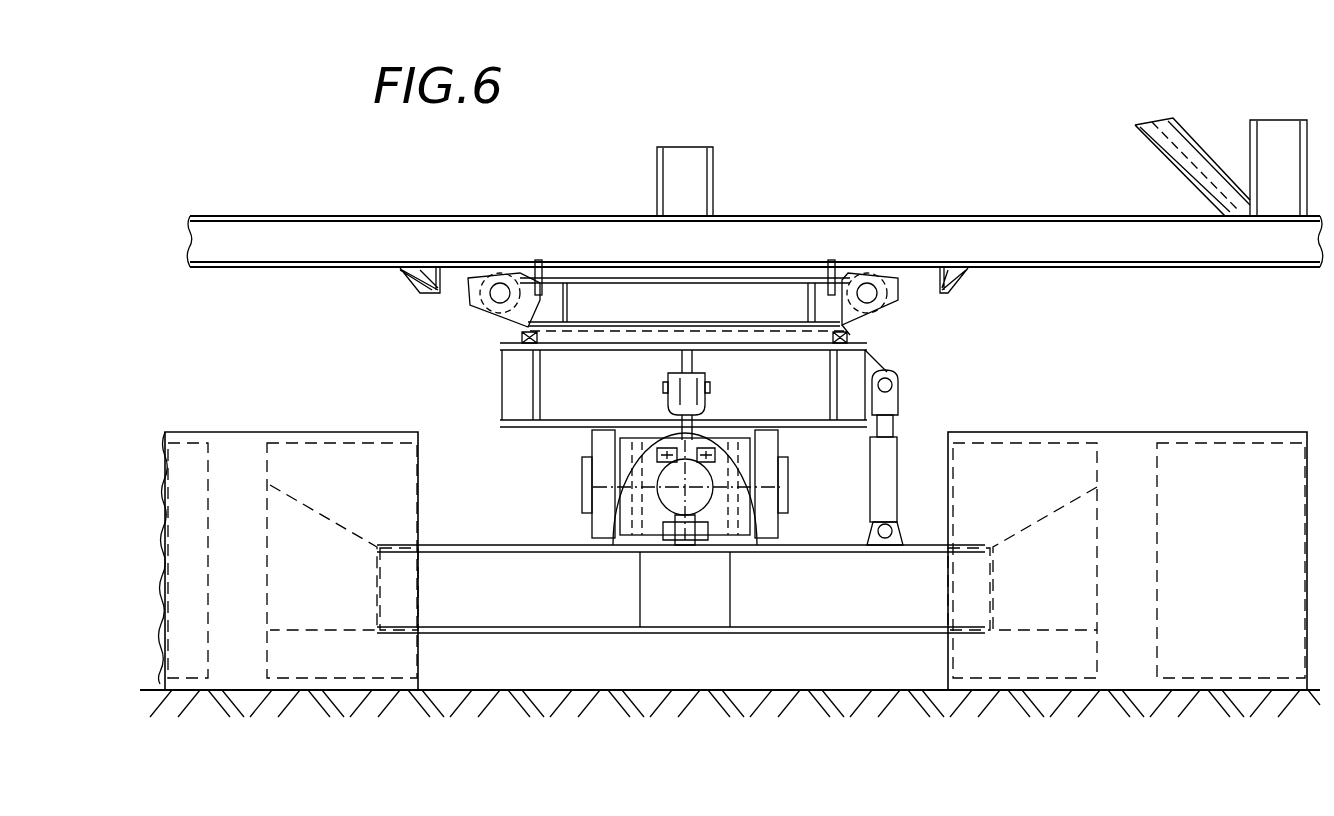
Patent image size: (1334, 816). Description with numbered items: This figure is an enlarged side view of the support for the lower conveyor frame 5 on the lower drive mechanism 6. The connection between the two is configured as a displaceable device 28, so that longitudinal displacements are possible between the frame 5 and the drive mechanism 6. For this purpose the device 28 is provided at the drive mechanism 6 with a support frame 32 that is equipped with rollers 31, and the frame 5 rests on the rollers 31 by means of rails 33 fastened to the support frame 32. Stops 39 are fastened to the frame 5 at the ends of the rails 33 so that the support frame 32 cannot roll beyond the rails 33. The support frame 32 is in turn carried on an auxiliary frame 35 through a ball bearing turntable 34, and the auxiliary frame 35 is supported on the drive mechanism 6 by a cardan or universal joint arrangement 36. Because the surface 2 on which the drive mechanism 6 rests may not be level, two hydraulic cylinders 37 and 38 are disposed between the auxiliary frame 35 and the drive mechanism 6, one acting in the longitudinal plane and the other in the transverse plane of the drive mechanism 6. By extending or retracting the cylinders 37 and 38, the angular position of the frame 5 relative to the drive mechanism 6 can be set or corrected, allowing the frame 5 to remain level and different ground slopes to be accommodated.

The surface 2 is at (890, 689).
The lower conveyor frame 5 is at (1100, 275).
The lower drive mechanism 6 is at (1220, 422).
The displaceable device 28 is at (905, 296).
The rollers 31 is at (860, 322).
The support frame 32 is at (783, 290).
The rails 33 is at (448, 285).
The ball bearing turntable 34 is at (520, 337).
The auxiliary frame 35 is at (562, 396).
The cardan or universal joint arrangement 36 is at (580, 487).
The hydraulic cylinder 37 is at (680, 495).
The hydraulic cylinder 38 is at (882, 450).
The stops 39 is at (405, 276).